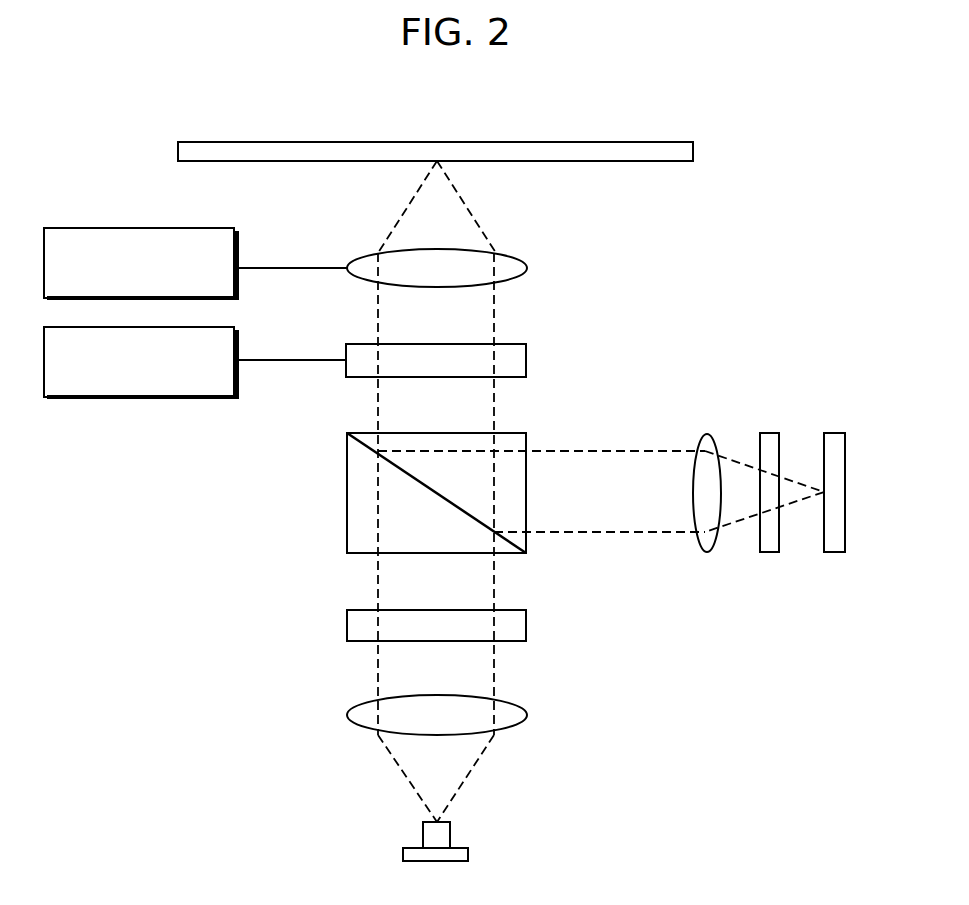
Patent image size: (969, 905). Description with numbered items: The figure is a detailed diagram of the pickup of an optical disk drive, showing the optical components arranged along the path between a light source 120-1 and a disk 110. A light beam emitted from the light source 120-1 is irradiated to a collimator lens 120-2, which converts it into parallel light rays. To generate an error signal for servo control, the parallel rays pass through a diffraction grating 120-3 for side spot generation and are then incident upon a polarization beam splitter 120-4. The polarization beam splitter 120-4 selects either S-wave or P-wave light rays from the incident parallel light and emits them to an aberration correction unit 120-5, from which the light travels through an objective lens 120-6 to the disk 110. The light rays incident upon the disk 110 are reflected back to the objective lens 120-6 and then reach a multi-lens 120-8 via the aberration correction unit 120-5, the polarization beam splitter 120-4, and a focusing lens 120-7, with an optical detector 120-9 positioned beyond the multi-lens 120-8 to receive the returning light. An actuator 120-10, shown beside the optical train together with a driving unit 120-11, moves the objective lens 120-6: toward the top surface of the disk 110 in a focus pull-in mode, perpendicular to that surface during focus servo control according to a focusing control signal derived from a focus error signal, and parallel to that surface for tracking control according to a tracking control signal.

The disk 110 is at (693, 151).
The light source 120-1 is at (468, 855).
The collimator lens 120-2 is at (527, 715).
The diffraction grating 120-3 is at (527, 625).
The polarization beam splitter 120-4 is at (526, 433).
The aberration correction unit 120-5 is at (527, 360).
The objective lens 120-6 is at (527, 268).
The focusing lens 120-7 is at (707, 434).
The multi-lens 120-8 is at (769, 552).
The optical detector 120-9 is at (833, 433).
The actuator 120-10 is at (142, 228).
The driving unit 120-11 is at (145, 397).